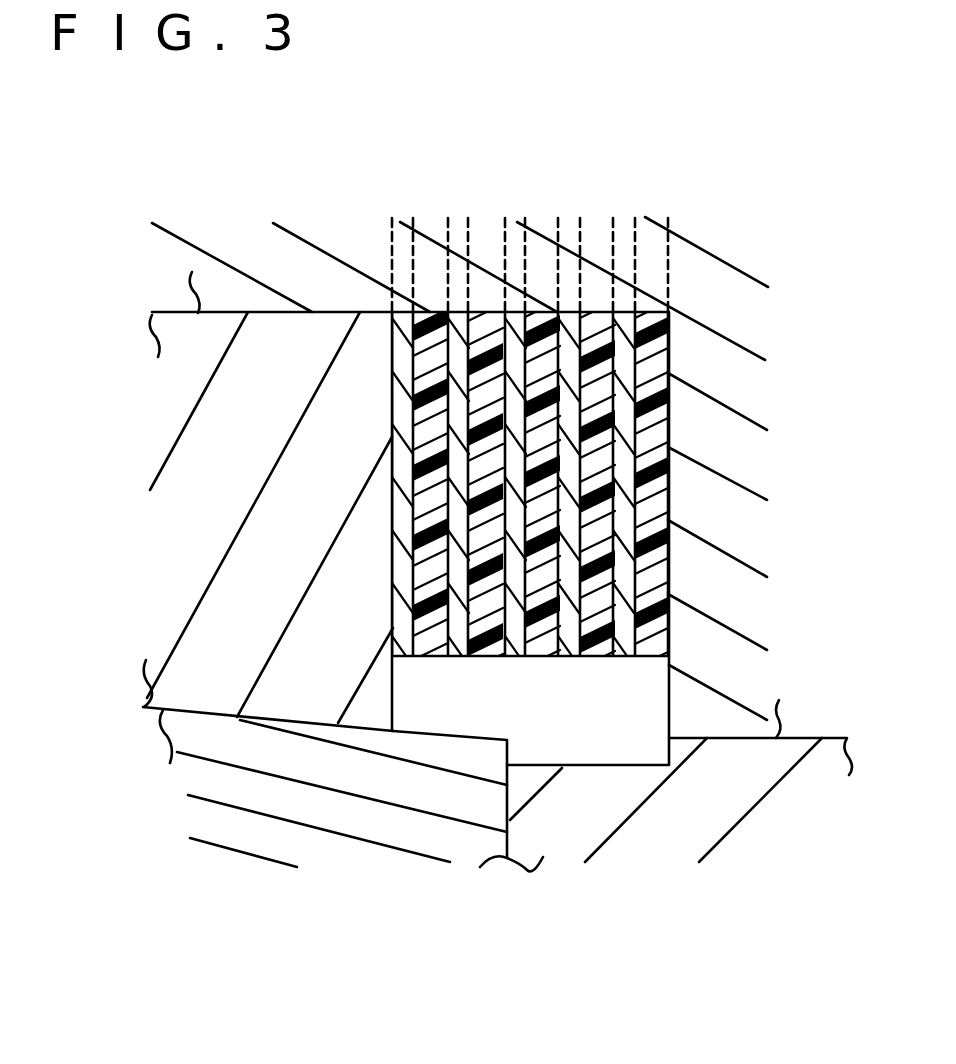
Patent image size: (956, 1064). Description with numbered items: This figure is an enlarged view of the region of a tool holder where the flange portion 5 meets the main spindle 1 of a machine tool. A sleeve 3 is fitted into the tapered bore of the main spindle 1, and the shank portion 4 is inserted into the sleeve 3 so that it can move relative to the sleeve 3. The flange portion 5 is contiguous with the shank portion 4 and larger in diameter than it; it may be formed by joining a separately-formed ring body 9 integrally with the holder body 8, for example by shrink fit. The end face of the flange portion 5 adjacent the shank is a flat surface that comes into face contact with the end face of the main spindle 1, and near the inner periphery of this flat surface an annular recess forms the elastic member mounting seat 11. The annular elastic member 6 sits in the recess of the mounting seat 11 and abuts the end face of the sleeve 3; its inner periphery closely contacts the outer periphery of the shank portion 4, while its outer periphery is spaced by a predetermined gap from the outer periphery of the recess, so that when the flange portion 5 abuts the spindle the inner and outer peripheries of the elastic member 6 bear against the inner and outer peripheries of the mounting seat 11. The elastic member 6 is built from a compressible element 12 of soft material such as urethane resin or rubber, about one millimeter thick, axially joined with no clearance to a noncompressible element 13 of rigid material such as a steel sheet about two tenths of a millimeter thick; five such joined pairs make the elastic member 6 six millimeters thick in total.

The main spindle 1 is at (232, 832).
The sleeve 3 is at (157, 420).
The shank portion 4 is at (302, 256).
The flange portion 5 is at (571, 830).
The elastic member 6 is at (491, 635).
The holder body 8 is at (775, 244).
The ring body 9 is at (833, 828).
The elastic member mounting seat 11 is at (668, 702).
The compressible element 12 is at (483, 656).
The noncompressible element 13 is at (567, 656).